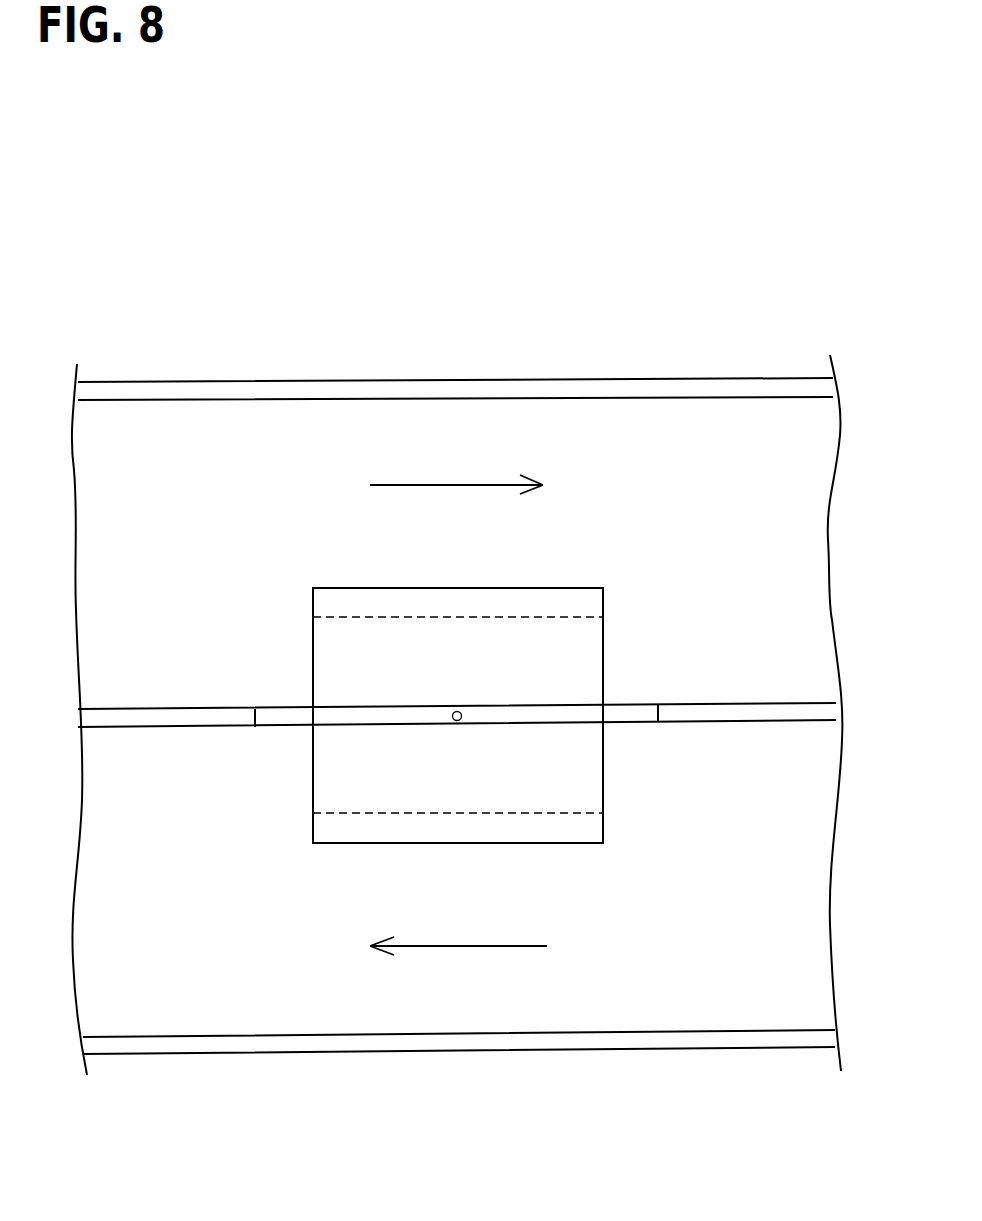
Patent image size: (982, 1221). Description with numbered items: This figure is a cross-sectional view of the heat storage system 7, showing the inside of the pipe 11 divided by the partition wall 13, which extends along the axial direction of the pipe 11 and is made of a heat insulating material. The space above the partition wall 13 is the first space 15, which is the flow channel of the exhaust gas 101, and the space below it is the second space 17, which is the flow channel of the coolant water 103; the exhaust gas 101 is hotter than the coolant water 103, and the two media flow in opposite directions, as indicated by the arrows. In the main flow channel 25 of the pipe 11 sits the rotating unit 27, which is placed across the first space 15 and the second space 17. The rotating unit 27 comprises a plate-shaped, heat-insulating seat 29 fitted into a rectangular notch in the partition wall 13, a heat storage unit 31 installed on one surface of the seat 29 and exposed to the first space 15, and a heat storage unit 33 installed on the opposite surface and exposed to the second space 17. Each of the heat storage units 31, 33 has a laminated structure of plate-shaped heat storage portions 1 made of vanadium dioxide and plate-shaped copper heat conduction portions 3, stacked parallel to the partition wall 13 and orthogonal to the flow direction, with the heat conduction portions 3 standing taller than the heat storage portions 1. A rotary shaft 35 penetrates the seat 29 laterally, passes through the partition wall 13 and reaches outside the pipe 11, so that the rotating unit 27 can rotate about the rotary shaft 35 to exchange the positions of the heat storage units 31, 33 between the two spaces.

The heat storage portion 1 is at (488, 645).
The heat conduction portion 3 is at (558, 596).
The heat storage system 7 is at (778, 295).
The pipe 11 is at (620, 378).
The partition wall 13 is at (183, 718).
The first space 15 is at (715, 483).
The second space 17 is at (717, 943).
The main flow channel 25 is at (228, 487).
The rotating unit 27 is at (632, 705).
The seat 29 is at (285, 717).
The heat storage unit 31 is at (403, 588).
The heat storage unit 33 is at (372, 843).
The rotary shaft 35 is at (457, 721).
The exhaust gas 101 is at (447, 483).
The coolant water 103 is at (461, 946).